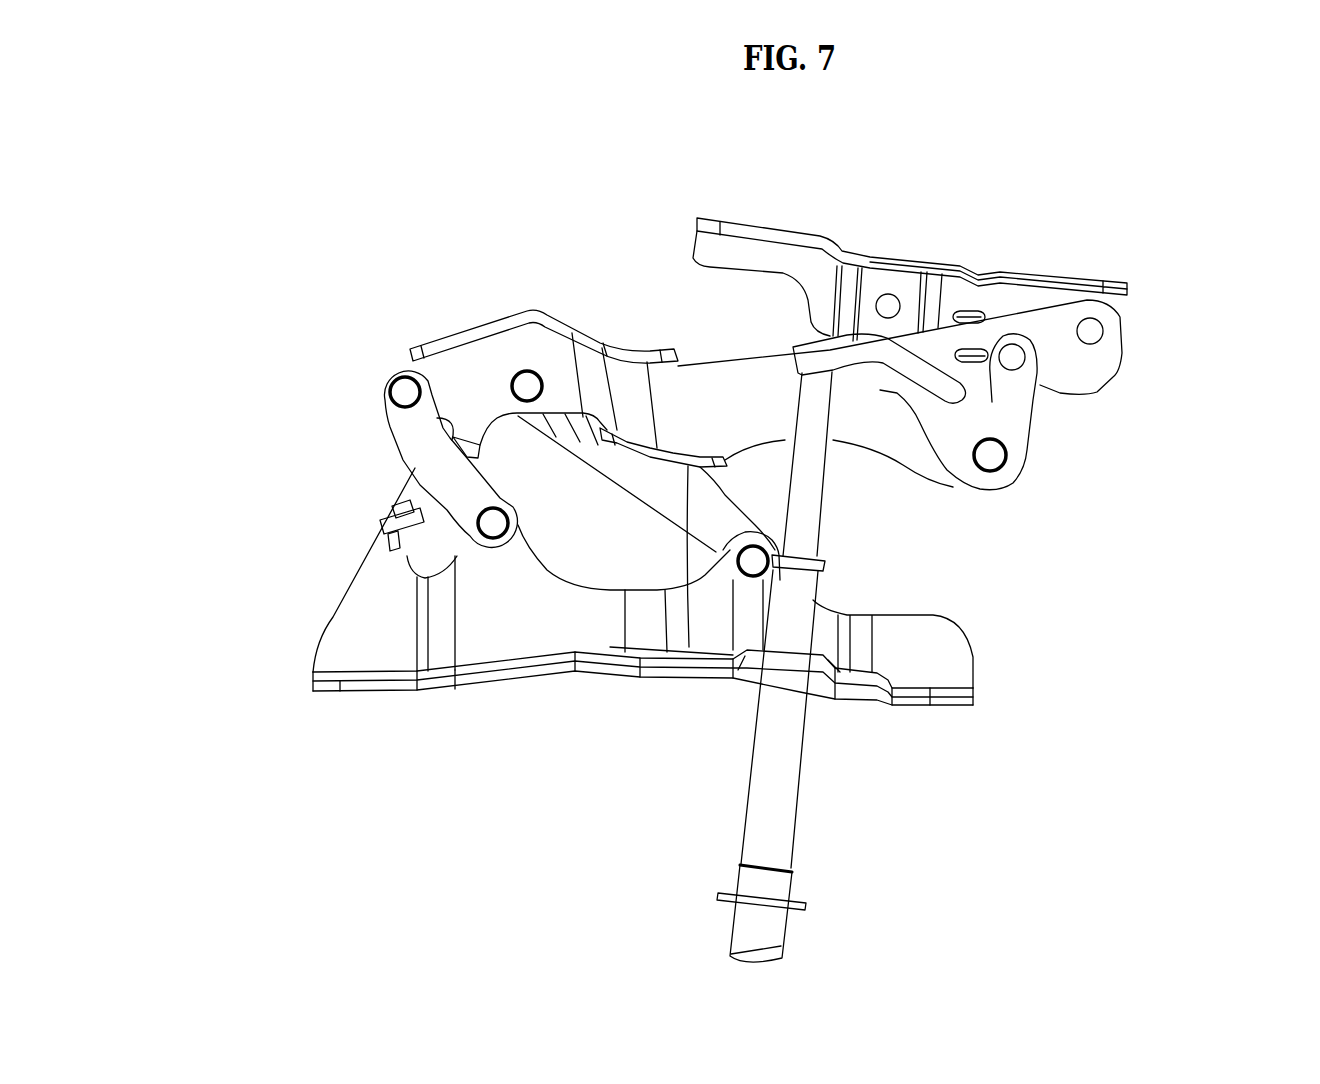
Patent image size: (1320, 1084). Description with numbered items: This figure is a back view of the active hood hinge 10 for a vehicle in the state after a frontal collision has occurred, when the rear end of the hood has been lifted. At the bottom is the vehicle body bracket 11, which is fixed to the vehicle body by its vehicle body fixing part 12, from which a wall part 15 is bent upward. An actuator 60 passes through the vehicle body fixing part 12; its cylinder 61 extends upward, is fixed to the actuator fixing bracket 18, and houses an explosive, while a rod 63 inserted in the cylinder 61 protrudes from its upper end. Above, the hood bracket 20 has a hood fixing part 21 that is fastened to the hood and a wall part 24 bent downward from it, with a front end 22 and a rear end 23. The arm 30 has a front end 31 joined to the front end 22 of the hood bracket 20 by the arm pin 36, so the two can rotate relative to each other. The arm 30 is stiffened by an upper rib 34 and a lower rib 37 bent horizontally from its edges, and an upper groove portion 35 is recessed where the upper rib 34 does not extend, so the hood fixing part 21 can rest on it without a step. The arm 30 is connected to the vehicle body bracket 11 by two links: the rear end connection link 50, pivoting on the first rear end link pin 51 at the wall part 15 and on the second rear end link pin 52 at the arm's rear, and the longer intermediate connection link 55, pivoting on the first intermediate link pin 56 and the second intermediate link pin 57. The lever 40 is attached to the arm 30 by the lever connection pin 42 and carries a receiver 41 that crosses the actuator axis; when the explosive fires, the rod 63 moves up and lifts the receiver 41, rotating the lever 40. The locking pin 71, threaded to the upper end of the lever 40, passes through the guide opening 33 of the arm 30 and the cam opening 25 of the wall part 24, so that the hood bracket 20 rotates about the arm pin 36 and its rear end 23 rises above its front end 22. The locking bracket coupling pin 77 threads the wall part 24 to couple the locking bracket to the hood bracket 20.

The active hood hinge 10 is at (390, 298).
The vehicle body bracket 11 is at (577, 610).
The vehicle body fixing part 12 is at (340, 690).
The wall part 15 is at (328, 620).
The actuator fixing bracket 18 is at (878, 708).
The hood bracket 20 is at (910, 228).
The hood fixing part 21 is at (776, 232).
The front end 22 is at (1130, 290).
The rear end 23 is at (700, 226).
The wall part 24 is at (826, 298).
The cam opening 25 is at (970, 316).
The arm 30 is at (470, 330).
The front end 31 is at (1124, 362).
The guide opening 33 is at (975, 356).
The upper rib 34 is at (560, 316).
The upper groove portion 35 is at (722, 362).
The arm pin 36 is at (1093, 332).
The lower rib 37 is at (702, 472).
The lever 40 is at (1031, 433).
The receiver 41 is at (790, 356).
The lever connection pin 42 is at (992, 460).
The rear end connection link 50 is at (410, 455).
The first rear end link pin 51 is at (492, 528).
The second rear end link pin 52 is at (400, 392).
The intermediate connection link 55 is at (645, 484).
The first intermediate link pin 56 is at (752, 565).
The second intermediate link pin 57 is at (525, 386).
The actuator 60 is at (883, 667).
The cylinder 61 is at (818, 642).
The rod 63 is at (820, 513).
The locking pin 71 is at (1015, 362).
The locking bracket coupling pin 77 is at (888, 300).